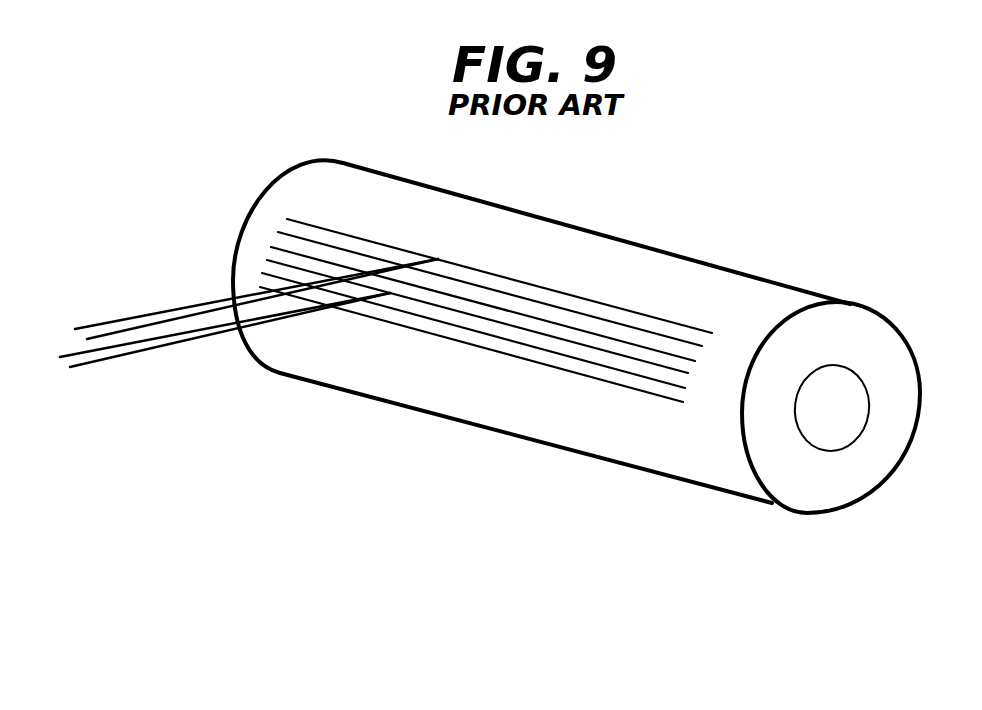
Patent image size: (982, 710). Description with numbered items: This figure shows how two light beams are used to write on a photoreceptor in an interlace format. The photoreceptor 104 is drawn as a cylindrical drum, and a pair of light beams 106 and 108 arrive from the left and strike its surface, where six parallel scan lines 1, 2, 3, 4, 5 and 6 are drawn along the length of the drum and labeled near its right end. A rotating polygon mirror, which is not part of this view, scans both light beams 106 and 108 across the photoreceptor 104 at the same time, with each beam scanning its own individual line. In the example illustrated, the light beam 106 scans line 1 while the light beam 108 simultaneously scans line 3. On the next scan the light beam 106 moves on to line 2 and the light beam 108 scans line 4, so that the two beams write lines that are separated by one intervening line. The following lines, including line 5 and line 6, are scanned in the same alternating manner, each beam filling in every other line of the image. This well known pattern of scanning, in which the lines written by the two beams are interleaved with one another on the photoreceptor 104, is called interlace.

The photoreceptor 104 is at (767, 287).
The light beam 106 is at (193, 305).
The light beam 108 is at (210, 338).
The line 1 is at (529, 284).
The line 2 is at (517, 298).
The line 3 is at (507, 313).
The line 4 is at (498, 326).
The line 5 is at (489, 340).
The line 6 is at (481, 353).